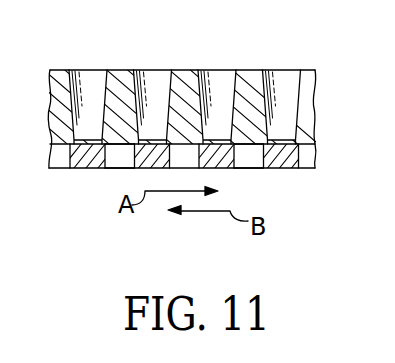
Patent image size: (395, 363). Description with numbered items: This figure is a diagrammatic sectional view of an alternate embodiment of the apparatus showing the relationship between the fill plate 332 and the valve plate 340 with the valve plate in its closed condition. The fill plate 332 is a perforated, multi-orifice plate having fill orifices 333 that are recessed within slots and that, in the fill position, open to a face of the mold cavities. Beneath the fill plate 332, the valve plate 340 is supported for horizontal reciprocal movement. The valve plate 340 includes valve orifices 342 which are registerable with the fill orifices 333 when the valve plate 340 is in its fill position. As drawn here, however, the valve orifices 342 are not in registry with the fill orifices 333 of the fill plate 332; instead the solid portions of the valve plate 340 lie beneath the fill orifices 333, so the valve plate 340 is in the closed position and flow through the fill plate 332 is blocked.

The fill plate 332 is at (314, 103).
The fill orifices 333 is at (221, 76).
The valve plate 340 is at (314, 153).
The valve orifices 342 is at (116, 163).